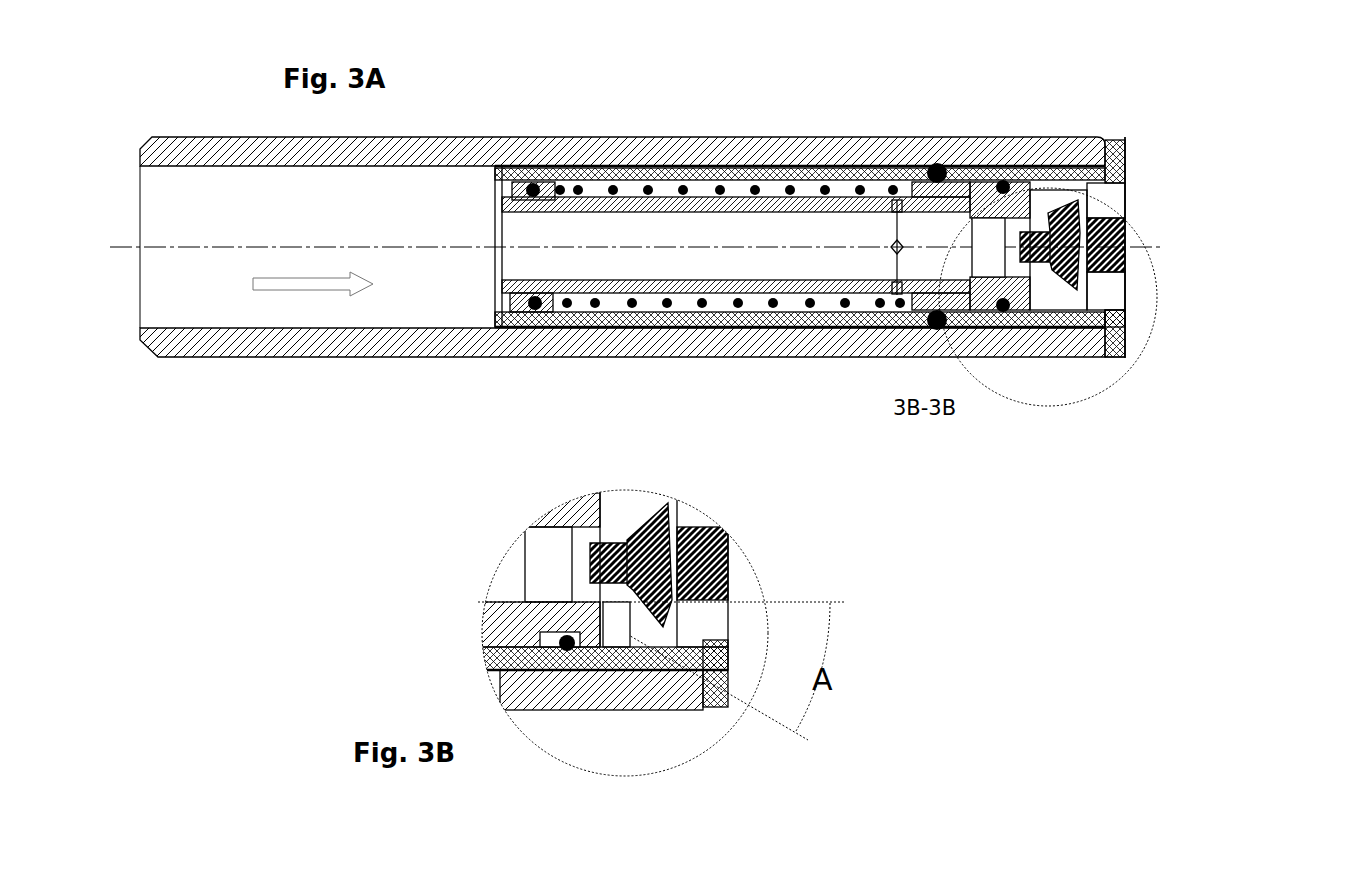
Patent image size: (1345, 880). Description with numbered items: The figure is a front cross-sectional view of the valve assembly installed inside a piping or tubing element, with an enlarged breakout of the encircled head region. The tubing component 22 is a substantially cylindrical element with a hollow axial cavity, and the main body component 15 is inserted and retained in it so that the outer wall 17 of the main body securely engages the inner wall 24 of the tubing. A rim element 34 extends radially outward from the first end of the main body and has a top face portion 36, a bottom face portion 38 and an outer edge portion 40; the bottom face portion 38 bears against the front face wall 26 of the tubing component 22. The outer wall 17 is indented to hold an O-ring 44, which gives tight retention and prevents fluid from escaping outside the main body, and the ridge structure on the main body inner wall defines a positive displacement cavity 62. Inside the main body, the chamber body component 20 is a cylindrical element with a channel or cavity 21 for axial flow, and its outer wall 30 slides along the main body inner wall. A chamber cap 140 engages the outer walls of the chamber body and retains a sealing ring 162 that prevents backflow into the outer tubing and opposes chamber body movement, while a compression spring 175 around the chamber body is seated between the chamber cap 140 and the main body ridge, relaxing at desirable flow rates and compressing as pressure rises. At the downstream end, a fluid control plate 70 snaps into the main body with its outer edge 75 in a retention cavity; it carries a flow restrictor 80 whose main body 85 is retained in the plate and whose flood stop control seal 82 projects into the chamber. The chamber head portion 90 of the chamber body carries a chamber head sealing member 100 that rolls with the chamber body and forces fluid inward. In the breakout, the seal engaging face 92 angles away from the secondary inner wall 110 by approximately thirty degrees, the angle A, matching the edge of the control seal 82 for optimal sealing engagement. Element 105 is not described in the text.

In FIG. 3A, the main body component 15 is at (637, 180).
In FIG. 3A, the outer wall of main body component 17 is at (540, 167).
In FIG. 3A, the chamber body component 20 is at (751, 205).
In FIG. 3A, the channel or cavity 21 is at (1025, 320).
In FIG. 3B, the channel or cavity 21 is at (542, 563).
In FIG. 3A, the tubing component 22 is at (162, 345).
In FIG. 3A, the inner wall of tubing component 24 is at (162, 330).
In FIG. 3A, the front face wall of tubing component 26 is at (1122, 155).
In FIG. 3A, the outer wall of chamber body component 30 is at (895, 292).
In FIG. 3A, the rim element 34 is at (1127, 168).
In FIG. 3A, the top face portion 36 is at (1128, 346).
In FIG. 3A, the bottom face portion 38 is at (1107, 350).
In FIG. 3A, the outer edge portion 40 is at (1126, 360).
In FIG. 3A, the sealing ring or O-ring 44 is at (935, 166).
In FIG. 3A, the positive displacement cavity 62 is at (945, 185).
In FIG. 3A, the fluid control plate 70 is at (1110, 200).
In FIG. 3A, the outer edge of fluid control plate 75 is at (1105, 173).
In FIG. 3B, the flow restrictor 80 is at (587, 558).
In FIG. 3B, the flood stop control seal or plunger seal 82 is at (614, 701).
In FIG. 3A, the main body of flow restrictor 85 is at (1115, 285).
In FIG. 3B, the chamber head portion 90 is at (487, 653).
In FIG. 3B, the seal engaging face 92 is at (613, 543).
In FIG. 3A, the chamber head sealing member 100 is at (1004, 180).
In FIG. 3B, the chamber head sealing member 100 is at (565, 648).
In FIG. 3A, the lower mesh layer 105 is at (810, 327).
In FIG. 3B, the secondary inner wall 110 is at (547, 603).
In FIG. 3A, the chamber cap 140 is at (497, 325).
In FIG. 3A, the sealing ring 162 is at (520, 317).
In FIG. 3A, the compression spring 175 is at (595, 308).